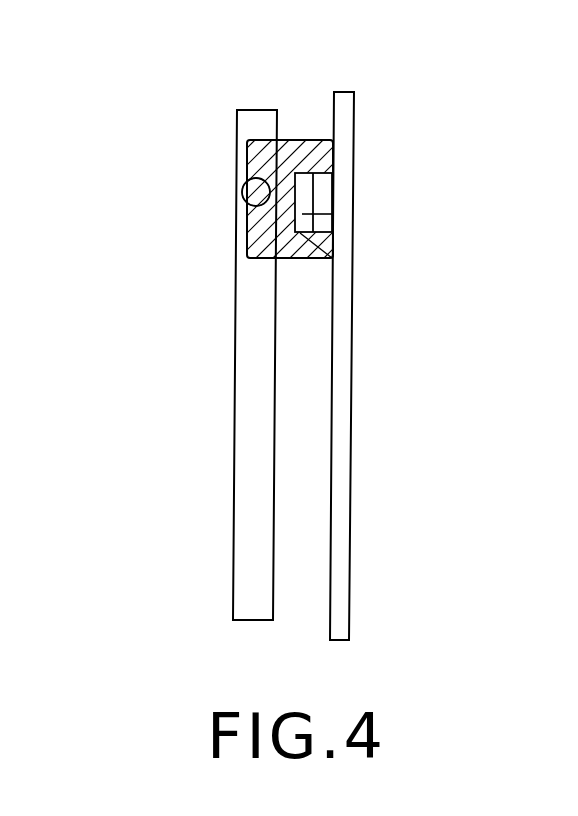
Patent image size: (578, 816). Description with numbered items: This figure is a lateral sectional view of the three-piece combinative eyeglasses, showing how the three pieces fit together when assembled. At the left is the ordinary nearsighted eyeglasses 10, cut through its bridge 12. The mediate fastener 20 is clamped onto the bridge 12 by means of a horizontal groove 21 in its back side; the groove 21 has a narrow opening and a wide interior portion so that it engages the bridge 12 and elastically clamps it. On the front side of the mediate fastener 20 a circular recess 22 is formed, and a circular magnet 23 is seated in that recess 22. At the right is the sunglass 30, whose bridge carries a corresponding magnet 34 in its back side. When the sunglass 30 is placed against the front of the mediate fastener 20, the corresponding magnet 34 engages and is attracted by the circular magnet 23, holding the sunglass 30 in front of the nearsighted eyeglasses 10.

The ordinary nearsighted eyeglasses 10 is at (222, 428).
The bridge 12 is at (258, 195).
The mediate fastener 20 is at (293, 140).
The horizontal groove 21 is at (256, 178).
The circular recesses 22 is at (300, 233).
The circular magnets 23 is at (333, 214).
The sunglass 30 is at (386, 427).
The corresponding magnets 34 is at (322, 185).